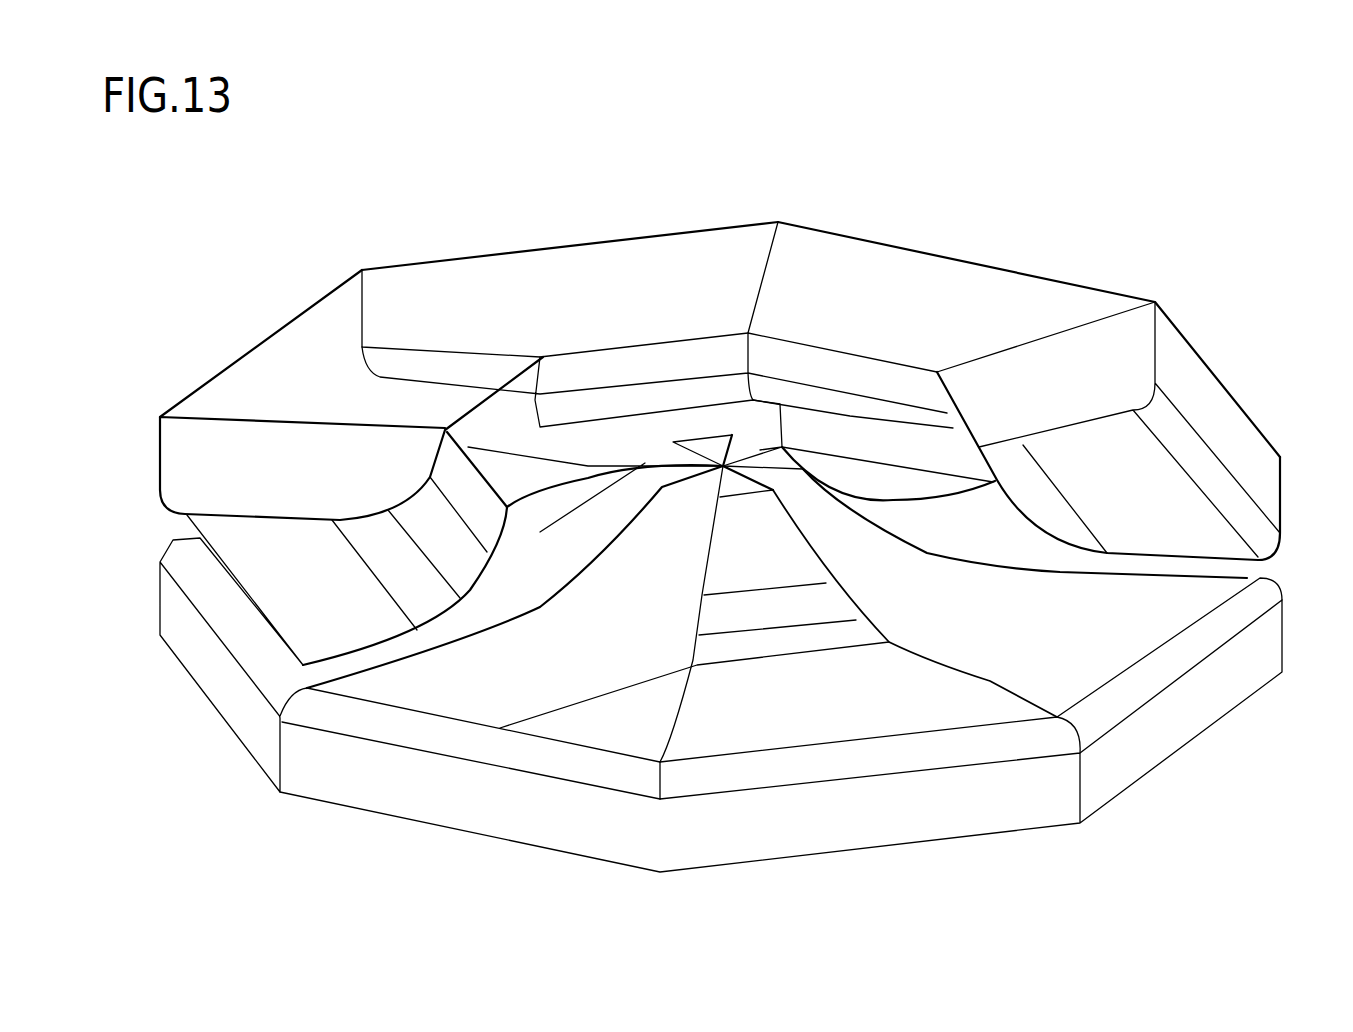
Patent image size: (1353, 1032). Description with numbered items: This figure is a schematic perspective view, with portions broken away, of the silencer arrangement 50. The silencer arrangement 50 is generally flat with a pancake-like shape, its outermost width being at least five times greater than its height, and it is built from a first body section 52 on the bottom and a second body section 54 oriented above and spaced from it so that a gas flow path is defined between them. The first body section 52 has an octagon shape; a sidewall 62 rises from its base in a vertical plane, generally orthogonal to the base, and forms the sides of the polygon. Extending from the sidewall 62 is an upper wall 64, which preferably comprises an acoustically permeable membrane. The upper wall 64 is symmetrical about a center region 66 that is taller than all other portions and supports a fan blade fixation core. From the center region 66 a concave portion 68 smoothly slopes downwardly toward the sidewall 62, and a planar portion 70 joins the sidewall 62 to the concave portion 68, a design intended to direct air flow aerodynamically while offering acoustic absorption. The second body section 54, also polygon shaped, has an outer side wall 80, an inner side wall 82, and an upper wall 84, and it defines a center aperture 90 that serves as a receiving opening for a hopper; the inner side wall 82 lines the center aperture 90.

The silencer arrangement 50 is at (941, 138).
The first body section 52 is at (1195, 707).
The second body section 54 is at (996, 266).
The sidewall 62 is at (990, 815).
The upper wall 64 is at (1118, 627).
The center region 66 is at (723, 466).
The concave portion 68 is at (545, 601).
The planar portion 70 is at (1200, 593).
The outer side wall 80 is at (157, 455).
The inner side wall 82 is at (893, 380).
The upper wall 84 is at (576, 262).
The center aperture 90 is at (588, 368).